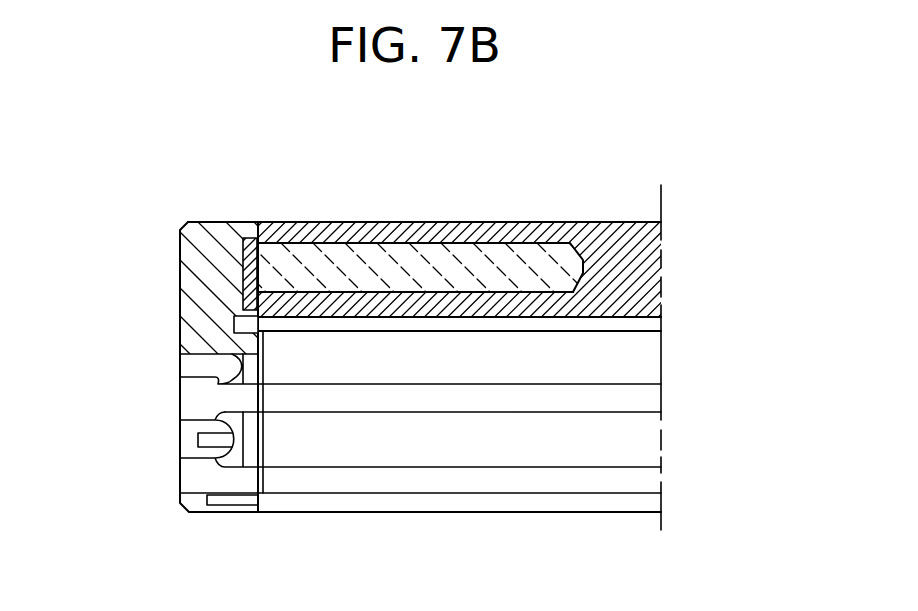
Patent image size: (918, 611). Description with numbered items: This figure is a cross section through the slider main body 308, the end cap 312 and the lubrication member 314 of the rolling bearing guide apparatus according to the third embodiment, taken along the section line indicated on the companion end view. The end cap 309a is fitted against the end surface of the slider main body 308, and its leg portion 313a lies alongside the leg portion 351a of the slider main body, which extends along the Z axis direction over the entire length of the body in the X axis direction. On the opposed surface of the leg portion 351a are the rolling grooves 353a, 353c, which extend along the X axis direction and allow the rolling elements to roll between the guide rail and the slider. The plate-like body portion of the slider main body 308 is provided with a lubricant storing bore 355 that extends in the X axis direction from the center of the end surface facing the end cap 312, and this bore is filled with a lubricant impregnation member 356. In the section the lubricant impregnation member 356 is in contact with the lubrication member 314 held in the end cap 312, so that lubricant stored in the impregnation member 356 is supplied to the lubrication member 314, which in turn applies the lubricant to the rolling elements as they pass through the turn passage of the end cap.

The slider main body 308 is at (397, 188).
The end cap 309a is at (208, 190).
The end cap 312 is at (210, 312).
The lubrication member 314 is at (254, 230).
The lubricant storing bore 355 is at (337, 292).
The lubricant impregnation member 356 is at (467, 270).
The rolling groove 353a is at (628, 365).
The rolling groove 353c is at (628, 447).
The leg portion 351a is at (422, 480).
The leg portion 313a is at (230, 480).